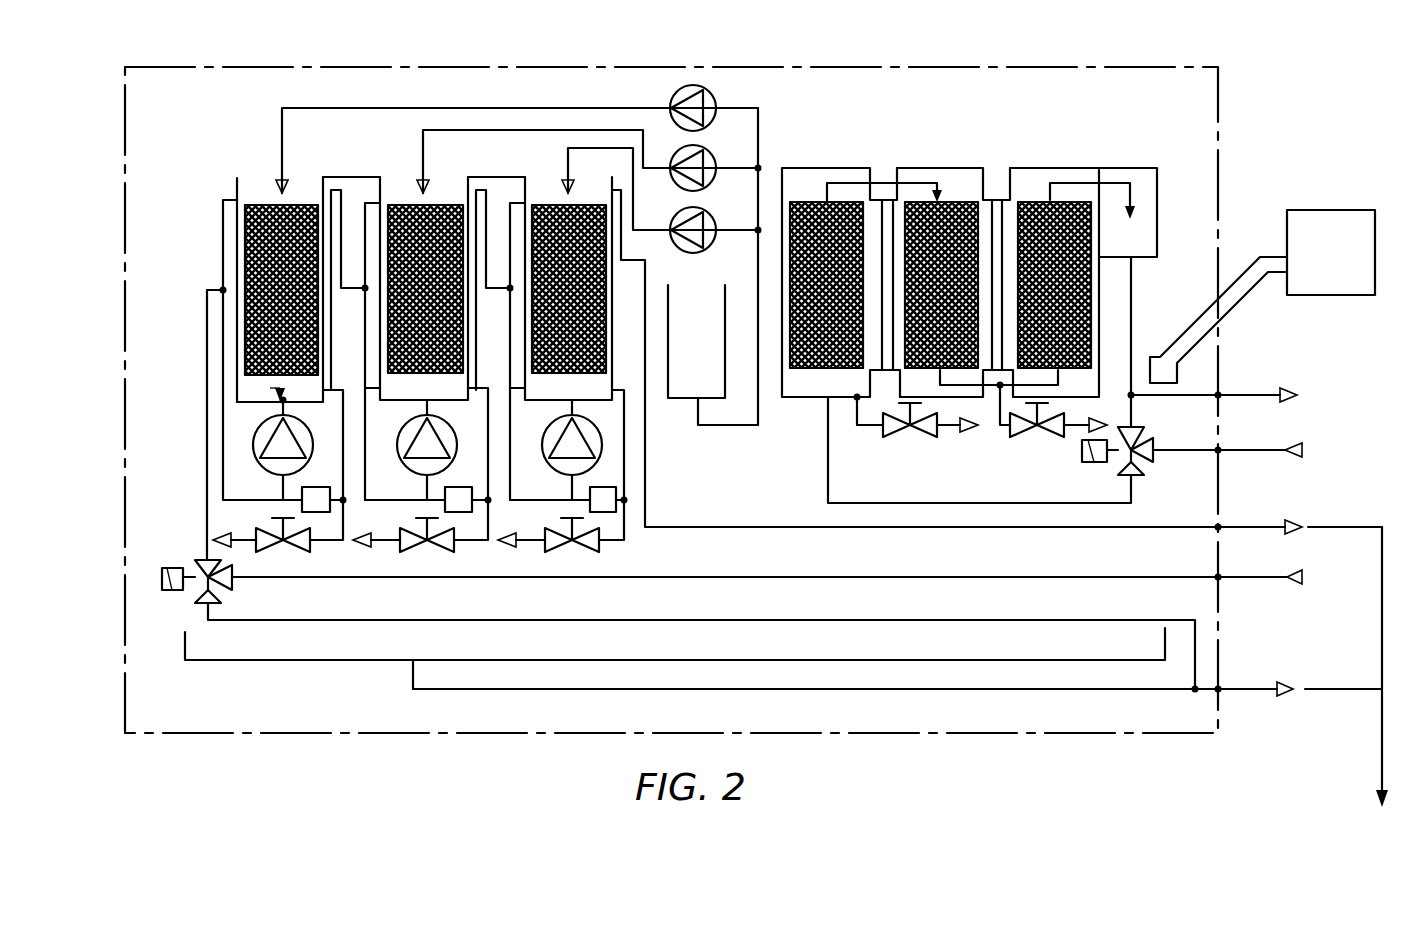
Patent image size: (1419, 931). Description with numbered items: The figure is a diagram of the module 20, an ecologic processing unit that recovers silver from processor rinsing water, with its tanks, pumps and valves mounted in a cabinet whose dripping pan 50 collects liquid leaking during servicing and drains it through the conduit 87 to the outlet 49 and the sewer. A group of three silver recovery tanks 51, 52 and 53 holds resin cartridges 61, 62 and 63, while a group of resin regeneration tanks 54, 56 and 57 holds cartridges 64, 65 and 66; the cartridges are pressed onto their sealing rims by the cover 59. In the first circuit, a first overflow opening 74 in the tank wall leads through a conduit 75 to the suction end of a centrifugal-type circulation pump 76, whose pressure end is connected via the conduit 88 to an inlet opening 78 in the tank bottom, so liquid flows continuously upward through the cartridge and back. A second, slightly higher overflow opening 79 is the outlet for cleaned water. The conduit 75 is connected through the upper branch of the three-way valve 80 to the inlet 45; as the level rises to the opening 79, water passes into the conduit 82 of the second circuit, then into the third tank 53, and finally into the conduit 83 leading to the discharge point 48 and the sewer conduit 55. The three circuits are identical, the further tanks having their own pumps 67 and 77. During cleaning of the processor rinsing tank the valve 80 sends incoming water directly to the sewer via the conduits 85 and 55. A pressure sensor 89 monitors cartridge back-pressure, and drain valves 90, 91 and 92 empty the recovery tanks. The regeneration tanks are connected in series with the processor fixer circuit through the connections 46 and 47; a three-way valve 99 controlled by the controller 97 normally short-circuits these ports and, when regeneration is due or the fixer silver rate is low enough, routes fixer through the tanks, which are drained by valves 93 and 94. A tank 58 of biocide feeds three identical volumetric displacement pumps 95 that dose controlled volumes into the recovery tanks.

The module 20 is at (492, 68).
The inlet 45 is at (1299, 577).
The connection 46 is at (1299, 455).
The connection 47 is at (1297, 398).
The discharge point 48 is at (1303, 526).
The outlet 49 is at (1293, 689).
The dripping pan 50 is at (310, 661).
The silver recovery tank 51 is at (237, 240).
The silver recovery tank 52 is at (365, 291).
The silver recovery tank 53 is at (510, 290).
The resin regeneration tank 54 is at (785, 192).
The conduit 55 is at (1381, 752).
The resin regeneration tank 56 is at (905, 192).
The resin regeneration tank 57 is at (1007, 217).
The tank 58 is at (690, 399).
The cover 59 is at (1120, 168).
The resin cartridge 61 is at (281, 290).
The resin cartridge 62 is at (424, 288).
The resin cartridge 63 is at (568, 288).
The resin cartridge 64 is at (826, 285).
The resin cartridge 65 is at (941, 285).
The resin cartridge 66 is at (1054, 285).
The pump 67 is at (411, 449).
The opening 74 is at (243, 192).
The conduit 75 is at (222, 321).
The centrifugal-type circulation pump 76 is at (254, 445).
The pump 77 is at (556, 449).
The inlet opening 78 is at (272, 388).
The opening 79 is at (313, 192).
The three-way valve 80 is at (199, 569).
The conduit 82 is at (366, 373).
The conduit 83 is at (740, 527).
The conduit 85 is at (690, 619).
The conduit 87 is at (690, 690).
The conduit 88 is at (283, 411).
The pressure sensor 89 is at (272, 498).
The drain valve 90 is at (279, 532).
The drain valve 91 is at (420, 485).
The drain valve 92 is at (561, 486).
The valve 93 is at (912, 437).
The valve 94 is at (1037, 437).
The volumetric displacement pumps 95 is at (713, 160).
The controller 97 is at (1300, 228).
The three-way valve 99 is at (1145, 458).